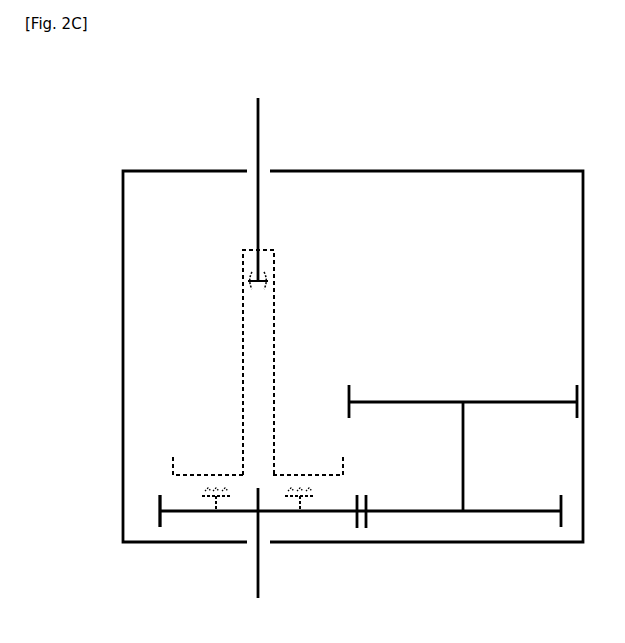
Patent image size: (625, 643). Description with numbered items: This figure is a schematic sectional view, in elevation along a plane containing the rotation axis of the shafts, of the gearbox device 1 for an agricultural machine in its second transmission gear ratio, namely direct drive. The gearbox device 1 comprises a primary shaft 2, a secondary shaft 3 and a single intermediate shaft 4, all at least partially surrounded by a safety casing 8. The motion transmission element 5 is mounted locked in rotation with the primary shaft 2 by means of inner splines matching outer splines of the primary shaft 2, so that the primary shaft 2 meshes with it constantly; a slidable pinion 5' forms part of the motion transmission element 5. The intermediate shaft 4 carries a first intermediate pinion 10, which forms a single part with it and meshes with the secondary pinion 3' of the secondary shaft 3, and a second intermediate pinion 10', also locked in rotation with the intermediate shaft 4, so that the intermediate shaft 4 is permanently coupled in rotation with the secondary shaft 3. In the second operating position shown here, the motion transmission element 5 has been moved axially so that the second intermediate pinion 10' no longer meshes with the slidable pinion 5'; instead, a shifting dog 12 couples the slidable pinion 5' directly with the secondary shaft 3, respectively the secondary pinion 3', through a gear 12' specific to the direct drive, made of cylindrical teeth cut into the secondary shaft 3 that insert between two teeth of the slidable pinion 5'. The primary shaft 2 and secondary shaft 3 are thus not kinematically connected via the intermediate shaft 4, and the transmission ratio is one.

The gearbox device 1 is at (425, 117).
The primary shaft 2 is at (257, 124).
The secondary shaft 3 is at (310, 544).
The secondary pinion 3' is at (106, 522).
The intermediate shaft 4 is at (460, 472).
The motion transmission element 5 is at (217, 362).
The slidable pinion 5' is at (248, 422).
The safety casing 8 is at (476, 170).
The first intermediate pinion 10 is at (360, 541).
The second intermediate pinion 10' is at (463, 351).
The shifting dog 12 is at (130, 485).
The gear specific to the direct drive 12' is at (300, 499).